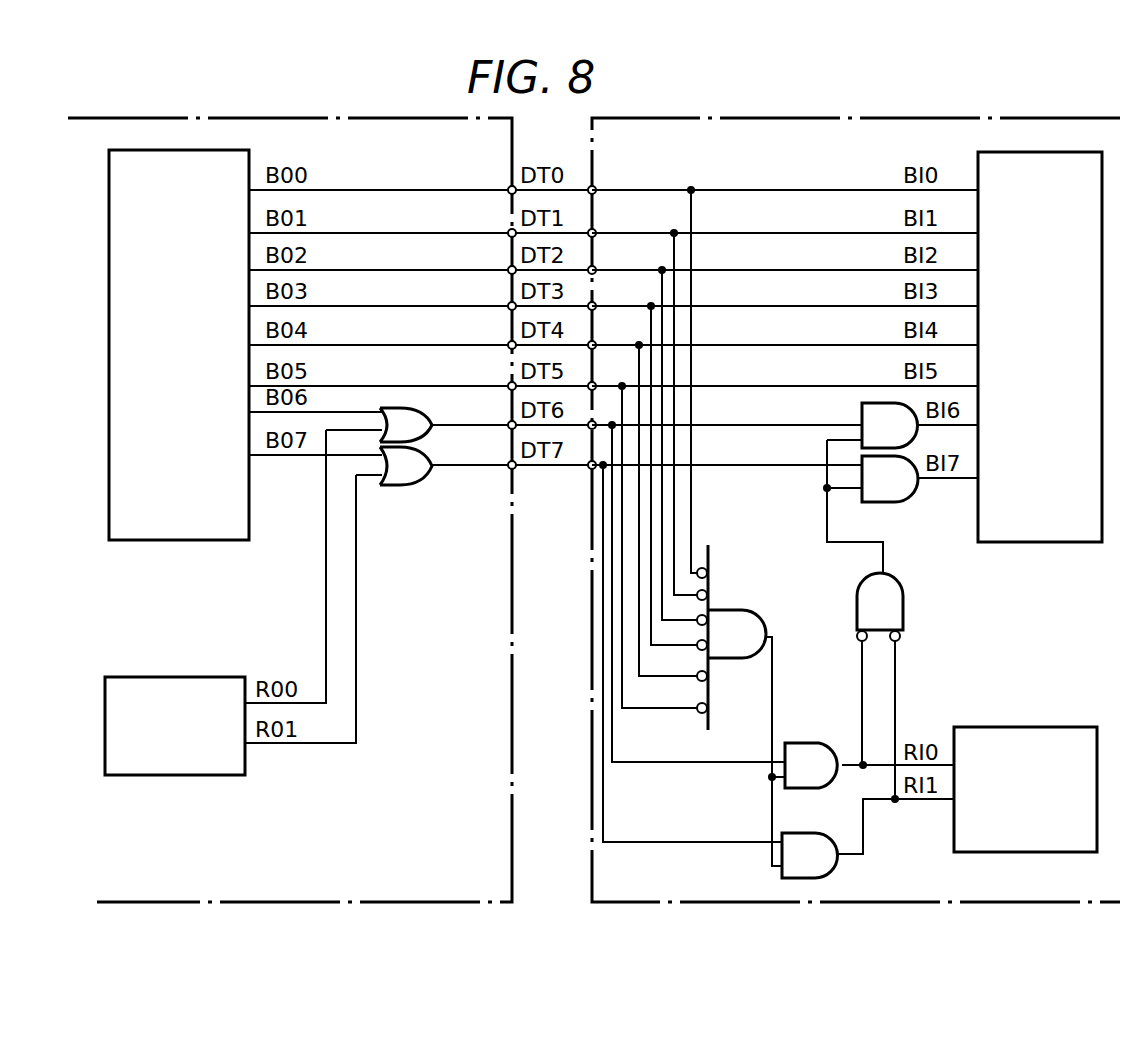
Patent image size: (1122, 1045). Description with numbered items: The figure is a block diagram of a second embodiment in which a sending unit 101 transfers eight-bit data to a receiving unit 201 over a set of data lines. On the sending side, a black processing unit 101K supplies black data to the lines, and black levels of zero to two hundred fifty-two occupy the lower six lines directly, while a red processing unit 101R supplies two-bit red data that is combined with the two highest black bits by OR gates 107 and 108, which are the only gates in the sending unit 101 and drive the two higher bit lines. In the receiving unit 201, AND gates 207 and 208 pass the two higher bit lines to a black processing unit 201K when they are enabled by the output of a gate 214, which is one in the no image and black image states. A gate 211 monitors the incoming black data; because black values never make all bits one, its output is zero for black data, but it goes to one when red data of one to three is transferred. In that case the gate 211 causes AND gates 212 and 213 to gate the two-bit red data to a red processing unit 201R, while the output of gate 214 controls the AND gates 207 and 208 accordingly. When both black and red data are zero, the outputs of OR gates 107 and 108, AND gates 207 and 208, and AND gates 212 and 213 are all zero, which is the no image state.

The sending unit 101 is at (245, 116).
The receiving unit 201 is at (801, 118).
The black processing unit 101K is at (181, 542).
The red processing unit 101R is at (188, 677).
The OR gate 107 is at (410, 408).
The OR gate 108 is at (422, 484).
The black processing unit 201K is at (1003, 544).
The red processing unit 201R is at (1018, 727).
The AND gate 207 is at (860, 410).
The AND gate 208 is at (905, 503).
The gate 211 is at (758, 600).
The AND gate 212 is at (812, 742).
The AND gate 213 is at (820, 833).
The gate 214 is at (903, 612).